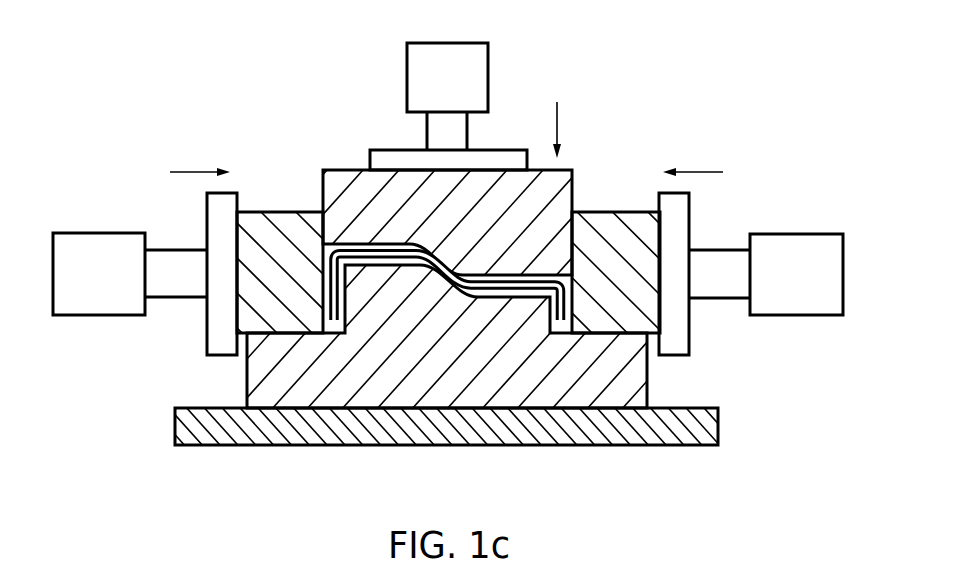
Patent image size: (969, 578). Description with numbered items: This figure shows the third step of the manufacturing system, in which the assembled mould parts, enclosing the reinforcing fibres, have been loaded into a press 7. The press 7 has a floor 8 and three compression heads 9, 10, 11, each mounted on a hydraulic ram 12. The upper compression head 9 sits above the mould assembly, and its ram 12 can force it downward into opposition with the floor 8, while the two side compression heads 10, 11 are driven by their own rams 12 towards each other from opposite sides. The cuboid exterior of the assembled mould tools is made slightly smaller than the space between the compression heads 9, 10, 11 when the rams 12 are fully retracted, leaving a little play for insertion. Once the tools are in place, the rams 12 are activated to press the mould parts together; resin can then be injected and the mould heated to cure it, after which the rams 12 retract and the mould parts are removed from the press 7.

The press 7 is at (733, 139).
The floor 8 is at (338, 447).
The compression head 9 is at (380, 156).
The compression head 10 is at (220, 332).
The compression head 11 is at (677, 333).
The hydraulic rams 12 is at (475, 72).